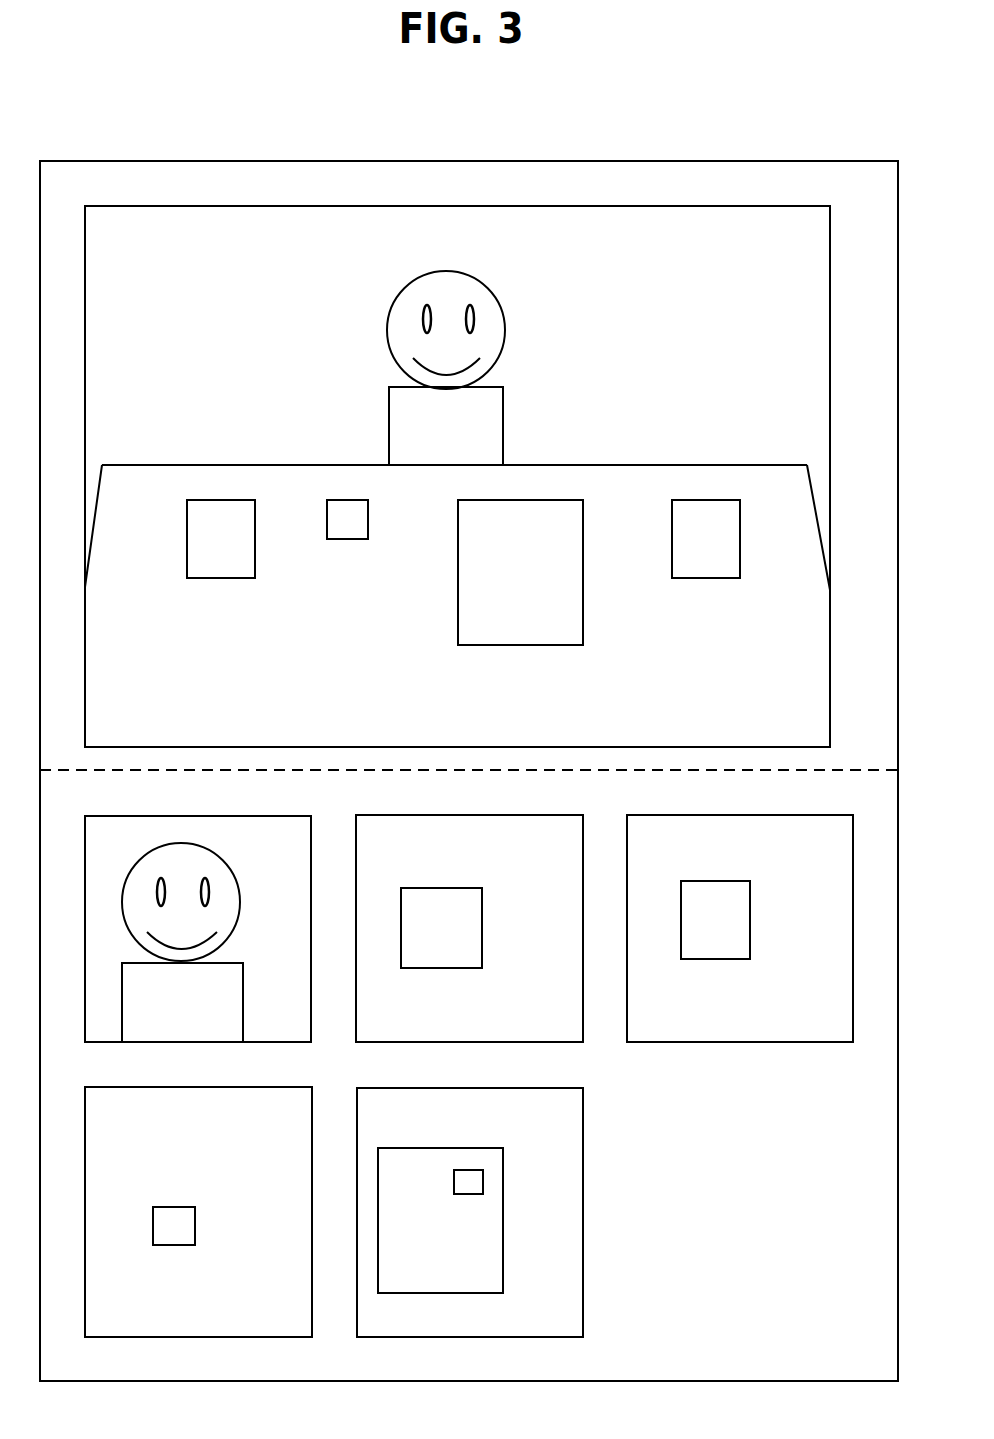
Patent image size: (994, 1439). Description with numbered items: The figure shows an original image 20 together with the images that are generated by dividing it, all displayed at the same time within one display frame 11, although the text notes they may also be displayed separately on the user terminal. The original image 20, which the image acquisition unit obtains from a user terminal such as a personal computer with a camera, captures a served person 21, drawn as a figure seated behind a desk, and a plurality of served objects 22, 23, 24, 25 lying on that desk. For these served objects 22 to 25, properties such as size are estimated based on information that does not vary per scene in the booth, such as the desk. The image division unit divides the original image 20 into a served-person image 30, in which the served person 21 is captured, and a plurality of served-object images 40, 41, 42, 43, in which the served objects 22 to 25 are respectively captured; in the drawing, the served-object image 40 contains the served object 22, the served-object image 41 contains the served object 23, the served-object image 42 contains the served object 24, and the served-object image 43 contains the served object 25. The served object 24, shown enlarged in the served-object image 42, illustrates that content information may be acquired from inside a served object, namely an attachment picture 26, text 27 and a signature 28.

The display screen 11 is at (897, 161).
The original image 20 is at (830, 206).
The served person 21 is at (480, 283).
The served object 22 is at (255, 500).
The served object 23 is at (368, 500).
The served object 24 is at (583, 500).
The served object 25 is at (740, 500).
The attachment picture 26 is at (483, 1170).
The text 27 is at (512, 1212).
The signature 28 is at (493, 1278).
The served-person image 30 is at (311, 816).
The served-object image 40 is at (583, 815).
The served-object image 41 is at (312, 1087).
The served-object image 42 is at (583, 1088).
The served-object image 43 is at (853, 815).